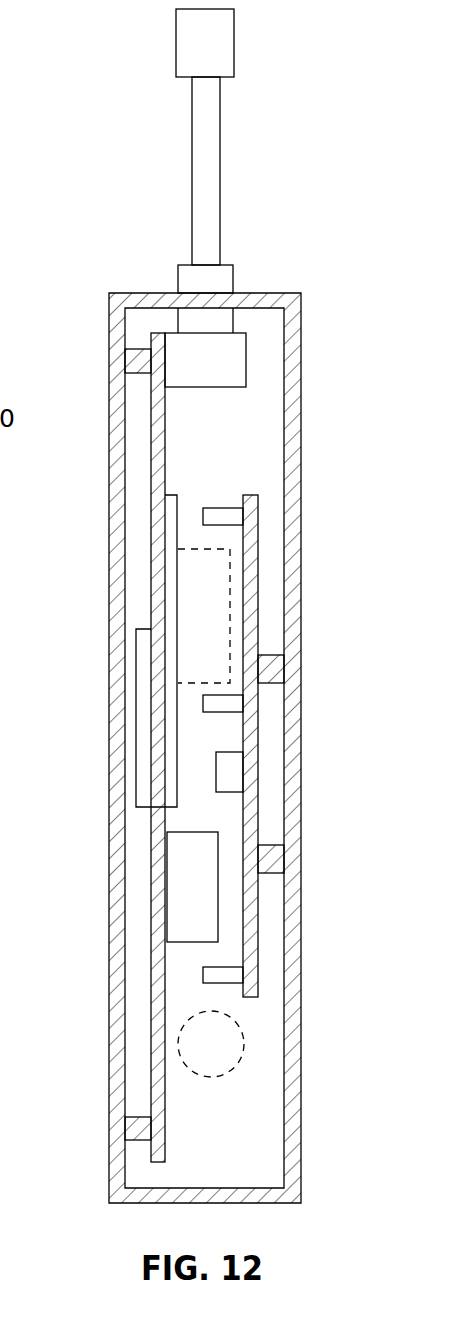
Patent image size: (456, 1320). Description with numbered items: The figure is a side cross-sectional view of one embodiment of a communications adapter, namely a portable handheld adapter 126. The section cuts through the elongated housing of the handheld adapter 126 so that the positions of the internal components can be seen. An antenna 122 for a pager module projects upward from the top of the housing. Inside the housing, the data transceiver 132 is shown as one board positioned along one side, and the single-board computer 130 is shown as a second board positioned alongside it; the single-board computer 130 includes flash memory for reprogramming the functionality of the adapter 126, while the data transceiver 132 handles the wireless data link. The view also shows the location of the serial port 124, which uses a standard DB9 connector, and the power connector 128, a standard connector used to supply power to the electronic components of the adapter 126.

The antenna 122 is at (205, 160).
The serial port 124 is at (188, 548).
The handheld adapter 126 is at (118, 240).
The power connector 128 is at (244, 1048).
The single-board computer 130 is at (258, 918).
The data transceiver 132 is at (146, 992).